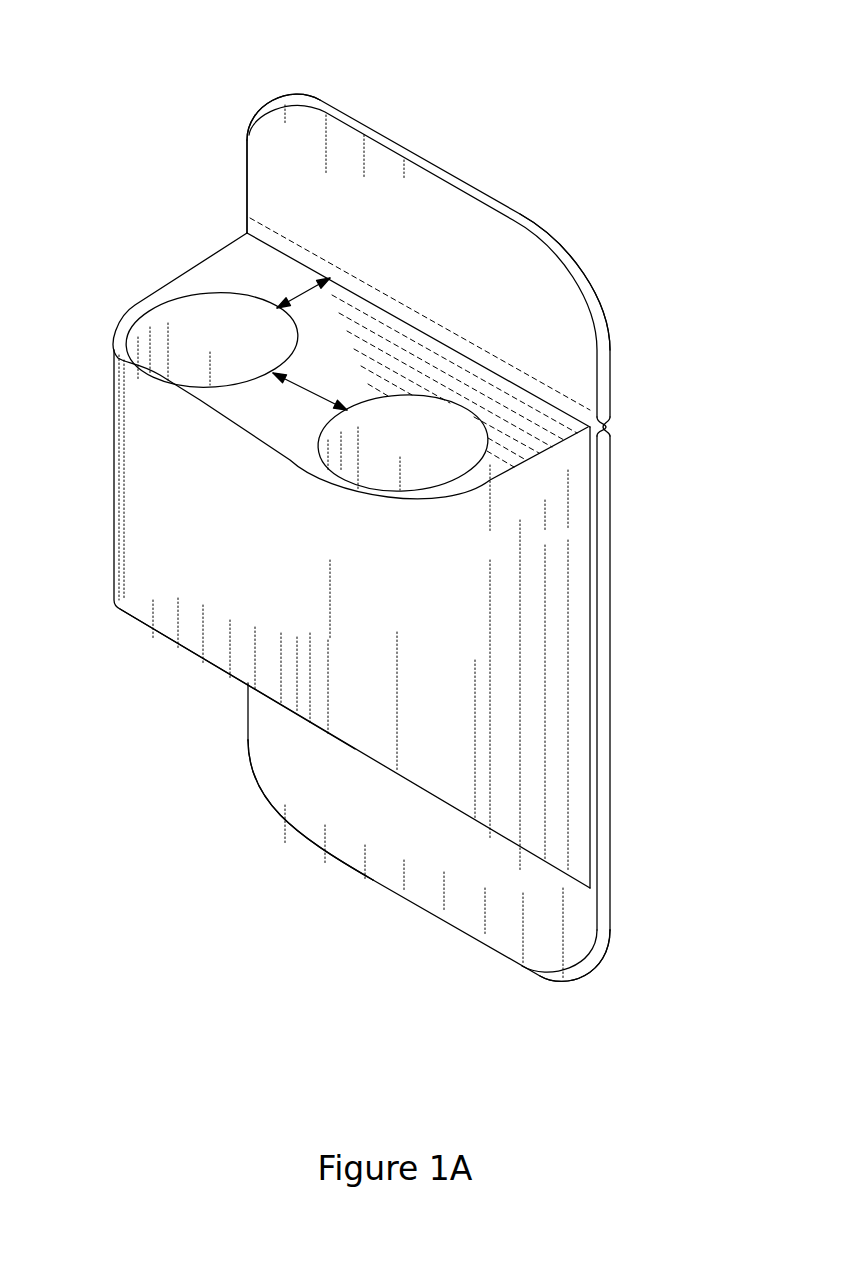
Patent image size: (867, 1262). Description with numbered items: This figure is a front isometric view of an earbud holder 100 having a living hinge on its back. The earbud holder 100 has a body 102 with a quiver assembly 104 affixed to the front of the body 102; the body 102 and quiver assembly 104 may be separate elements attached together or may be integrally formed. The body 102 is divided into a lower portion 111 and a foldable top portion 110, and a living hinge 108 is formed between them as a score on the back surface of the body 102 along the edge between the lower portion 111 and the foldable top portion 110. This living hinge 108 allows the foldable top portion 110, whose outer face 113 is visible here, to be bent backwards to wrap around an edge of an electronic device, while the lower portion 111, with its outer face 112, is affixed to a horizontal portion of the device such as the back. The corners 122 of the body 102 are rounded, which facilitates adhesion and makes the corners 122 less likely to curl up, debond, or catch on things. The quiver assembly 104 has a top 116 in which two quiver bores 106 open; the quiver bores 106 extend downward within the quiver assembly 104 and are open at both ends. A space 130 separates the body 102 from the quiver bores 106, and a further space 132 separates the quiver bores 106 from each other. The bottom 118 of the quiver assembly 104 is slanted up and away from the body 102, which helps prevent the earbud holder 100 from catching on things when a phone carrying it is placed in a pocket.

The earbud holder 100 is at (375, 536).
The body 102 is at (592, 970).
The quiver assembly 104 is at (568, 663).
The quiver bores 106 is at (183, 308).
The living hinge 108 is at (606, 427).
The foldable top of body 110 is at (573, 310).
The lower portion of body 111 is at (612, 528).
The outer face of lower portion of body 112 is at (262, 743).
The outer face of foldable top of body 113 is at (283, 142).
The top of quiver assembly 116 is at (200, 263).
The bottom of quiver assembly 118 is at (167, 640).
The corner of body 122 is at (290, 92).
The space between body and quiver bores 130 is at (305, 290).
The space between quiver bores 132 is at (300, 385).